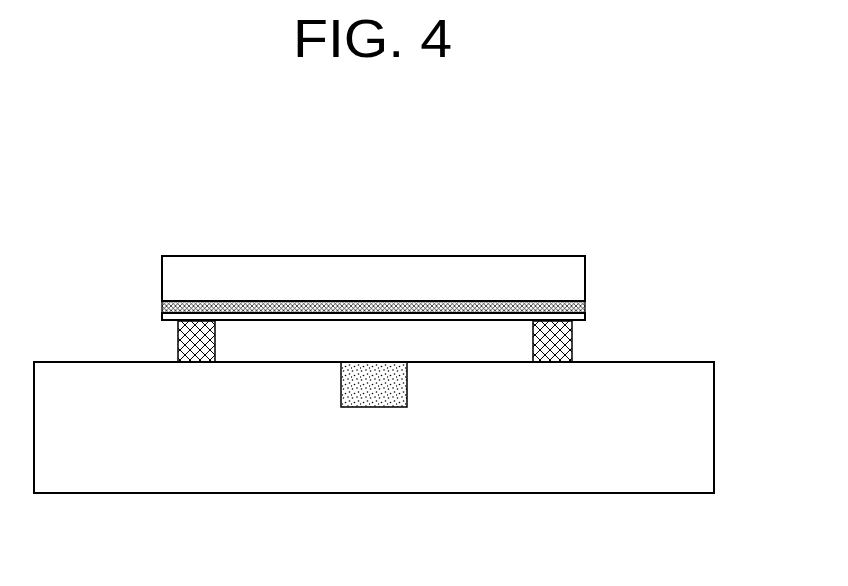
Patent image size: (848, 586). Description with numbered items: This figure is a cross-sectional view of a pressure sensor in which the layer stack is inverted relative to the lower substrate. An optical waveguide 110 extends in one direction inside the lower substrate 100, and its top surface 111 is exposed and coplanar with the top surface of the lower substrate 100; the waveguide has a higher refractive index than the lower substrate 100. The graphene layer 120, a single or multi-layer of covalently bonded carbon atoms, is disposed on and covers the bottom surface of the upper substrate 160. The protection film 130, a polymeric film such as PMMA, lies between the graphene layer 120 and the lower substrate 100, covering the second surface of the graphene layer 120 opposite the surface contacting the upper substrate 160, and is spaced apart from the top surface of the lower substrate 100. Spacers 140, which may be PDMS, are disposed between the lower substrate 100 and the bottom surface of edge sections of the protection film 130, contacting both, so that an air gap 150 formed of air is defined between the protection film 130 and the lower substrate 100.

The lower substrate 100 is at (700, 430).
The optical waveguide 110 is at (358, 396).
The top surface of the optical waveguide 111 is at (395, 358).
The graphene layer 120 is at (575, 308).
The protection film 130 is at (572, 317).
The spacers 140 is at (562, 339).
The air gap 150 is at (463, 332).
The upper substrate 160 is at (575, 279).